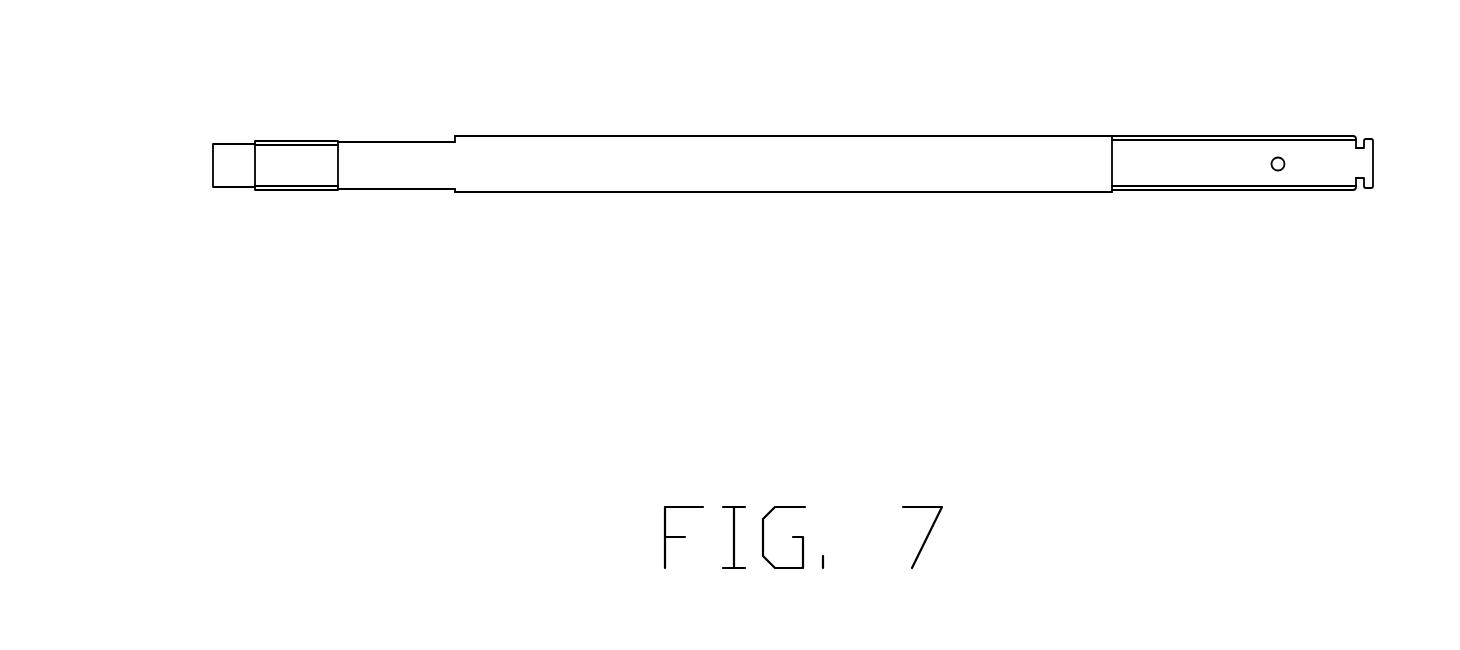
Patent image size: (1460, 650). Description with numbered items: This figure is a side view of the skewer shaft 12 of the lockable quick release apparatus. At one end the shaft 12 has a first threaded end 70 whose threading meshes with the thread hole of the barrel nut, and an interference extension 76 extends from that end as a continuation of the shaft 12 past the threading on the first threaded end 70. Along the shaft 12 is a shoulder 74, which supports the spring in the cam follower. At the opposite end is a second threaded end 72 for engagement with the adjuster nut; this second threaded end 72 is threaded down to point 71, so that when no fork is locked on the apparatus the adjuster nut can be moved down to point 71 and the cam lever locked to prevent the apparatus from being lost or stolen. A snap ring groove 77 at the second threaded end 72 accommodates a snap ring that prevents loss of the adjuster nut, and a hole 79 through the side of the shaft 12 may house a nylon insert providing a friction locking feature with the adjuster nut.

The shaft 12 is at (785, 193).
The first threaded end 70 is at (295, 140).
The point 71 is at (1112, 135).
The second threaded end 72 is at (1247, 137).
The shoulder 74 is at (454, 193).
The interference extension 76 is at (233, 187).
The snap ring groove 77 is at (1359, 188).
The hole 79 is at (1278, 164).